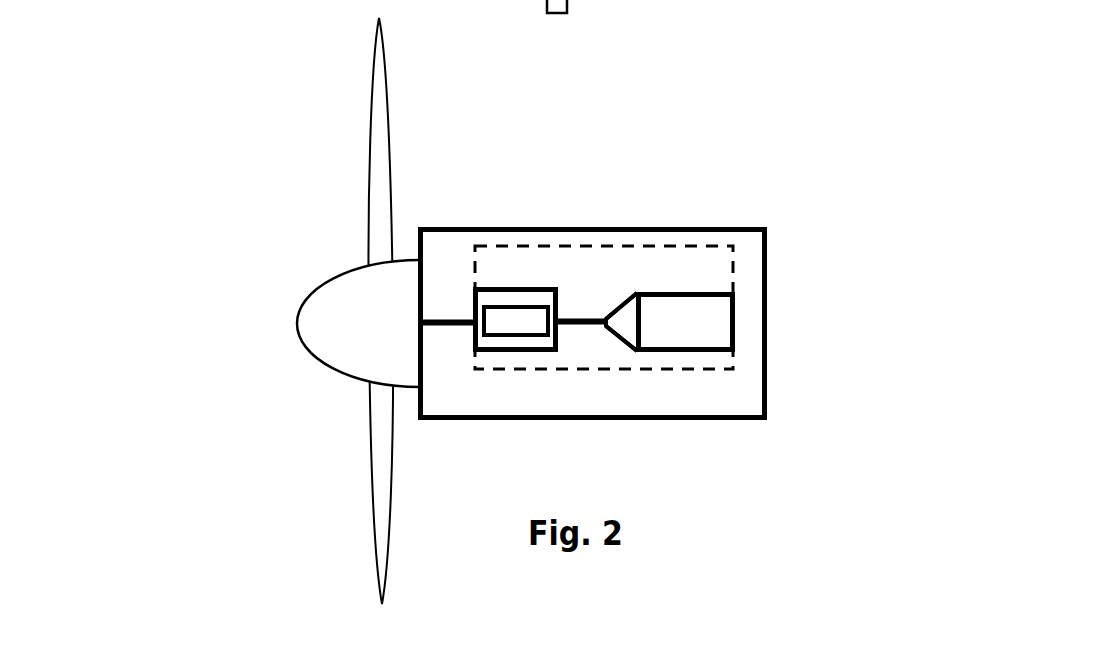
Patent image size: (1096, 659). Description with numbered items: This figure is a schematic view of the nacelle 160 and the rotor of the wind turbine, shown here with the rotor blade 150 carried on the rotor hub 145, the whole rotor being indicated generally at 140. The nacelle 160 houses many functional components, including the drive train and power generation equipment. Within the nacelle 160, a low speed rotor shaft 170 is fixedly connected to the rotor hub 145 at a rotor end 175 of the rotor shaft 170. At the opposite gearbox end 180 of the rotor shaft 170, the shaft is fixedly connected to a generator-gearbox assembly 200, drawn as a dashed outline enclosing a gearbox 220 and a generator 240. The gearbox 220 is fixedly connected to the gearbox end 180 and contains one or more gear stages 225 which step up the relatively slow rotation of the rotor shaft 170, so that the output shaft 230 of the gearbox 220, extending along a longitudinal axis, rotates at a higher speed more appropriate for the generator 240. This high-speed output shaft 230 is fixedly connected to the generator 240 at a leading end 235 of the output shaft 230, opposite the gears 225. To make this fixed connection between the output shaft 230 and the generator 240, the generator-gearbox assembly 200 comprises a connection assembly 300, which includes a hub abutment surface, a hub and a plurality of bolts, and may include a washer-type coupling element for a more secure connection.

The wind turbine 140 is at (265, 100).
The rotor hub 145 is at (312, 335).
The rotor blade 150 is at (377, 230).
The nacelle 160 is at (702, 421).
The rotor shaft 170 is at (443, 318).
The rotor end 175 is at (435, 328).
The gearbox end 180 is at (465, 318).
The generator-gearbox assembly 200 is at (604, 307).
The gearbox 220 is at (580, 312).
The gear stage 225 is at (517, 322).
The output shaft 230 is at (586, 325).
The leading end 235 is at (597, 318).
The generator 240 is at (669, 322).
The connection assembly 300 is at (626, 325).